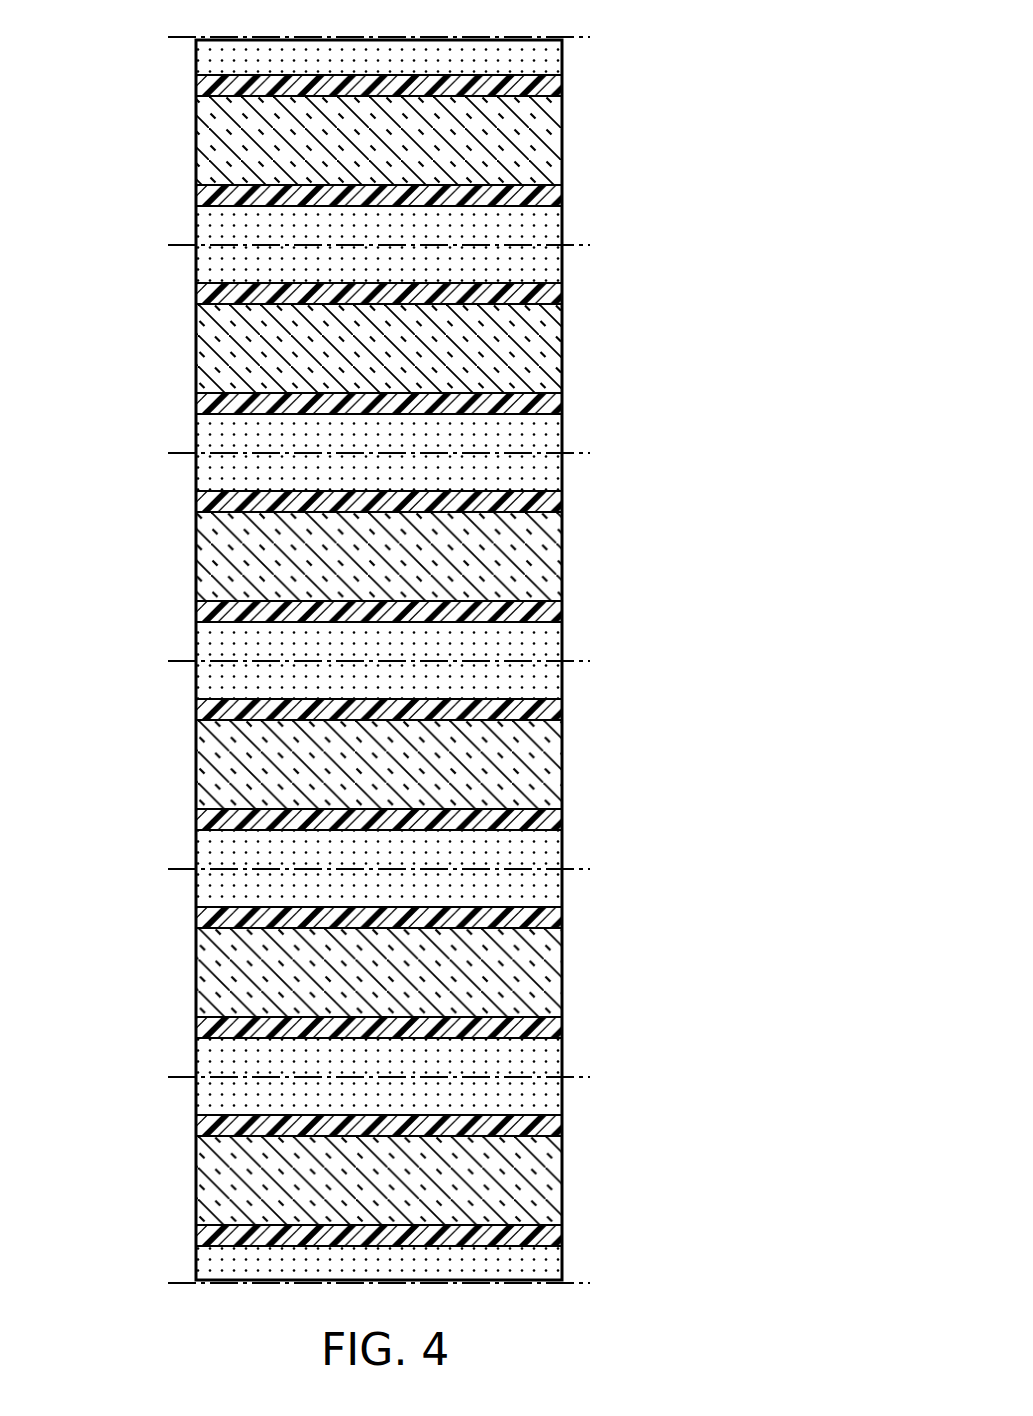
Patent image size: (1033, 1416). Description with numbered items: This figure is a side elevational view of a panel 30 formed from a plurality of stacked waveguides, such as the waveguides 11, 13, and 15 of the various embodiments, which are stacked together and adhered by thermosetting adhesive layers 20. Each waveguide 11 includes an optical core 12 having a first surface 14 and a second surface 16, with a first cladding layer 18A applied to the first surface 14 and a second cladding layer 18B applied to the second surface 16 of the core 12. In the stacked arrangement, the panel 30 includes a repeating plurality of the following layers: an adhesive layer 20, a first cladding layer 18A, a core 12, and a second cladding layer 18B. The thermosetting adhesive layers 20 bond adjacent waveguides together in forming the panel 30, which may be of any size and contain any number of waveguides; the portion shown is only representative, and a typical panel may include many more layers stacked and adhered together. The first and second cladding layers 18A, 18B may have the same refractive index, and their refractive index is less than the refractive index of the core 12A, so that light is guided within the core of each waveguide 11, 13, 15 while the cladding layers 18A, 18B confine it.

The panel 30 is at (689, 78).
The thermosetting adhesive layer 20 is at (196, 55).
The first cladding layer 18A is at (562, 86).
The second cladding layer 18B is at (562, 201).
The core 12A is at (562, 139).
The optical core 12 is at (562, 763).
The first surface 14 is at (214, 97).
The second surface 16 is at (214, 184).
The waveguide 11 is at (132, 698).
The waveguide 13 is at (642, 830).
The waveguide 15 is at (642, 1082).